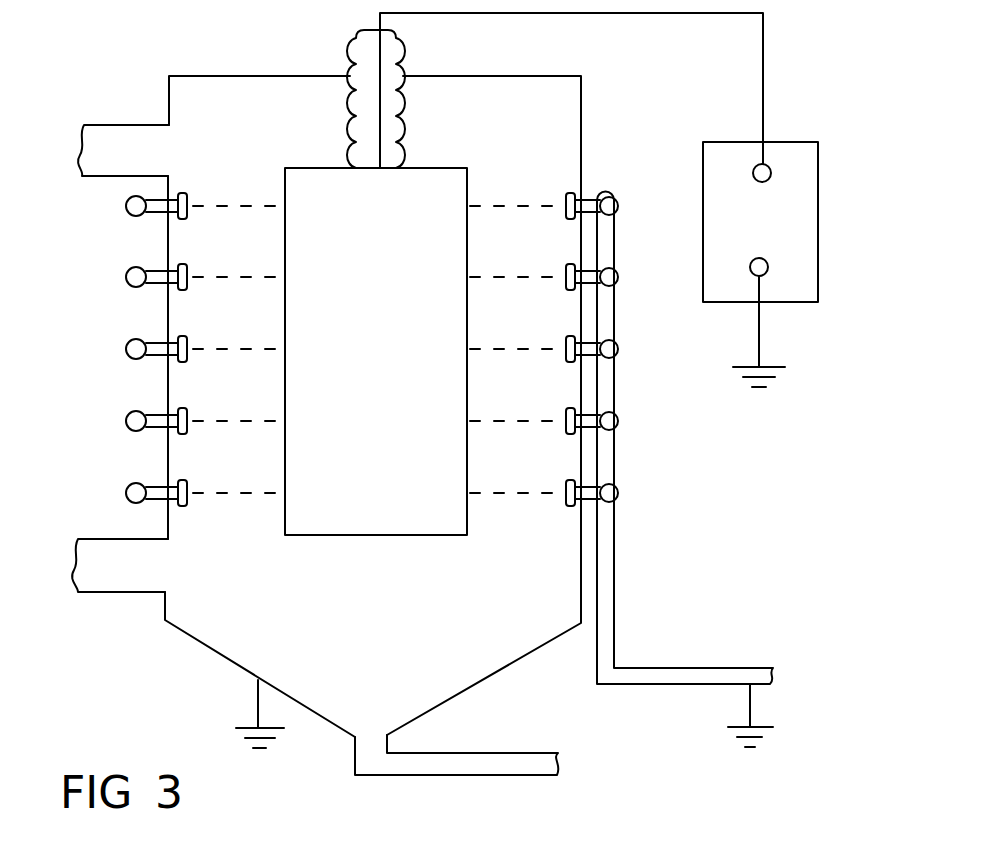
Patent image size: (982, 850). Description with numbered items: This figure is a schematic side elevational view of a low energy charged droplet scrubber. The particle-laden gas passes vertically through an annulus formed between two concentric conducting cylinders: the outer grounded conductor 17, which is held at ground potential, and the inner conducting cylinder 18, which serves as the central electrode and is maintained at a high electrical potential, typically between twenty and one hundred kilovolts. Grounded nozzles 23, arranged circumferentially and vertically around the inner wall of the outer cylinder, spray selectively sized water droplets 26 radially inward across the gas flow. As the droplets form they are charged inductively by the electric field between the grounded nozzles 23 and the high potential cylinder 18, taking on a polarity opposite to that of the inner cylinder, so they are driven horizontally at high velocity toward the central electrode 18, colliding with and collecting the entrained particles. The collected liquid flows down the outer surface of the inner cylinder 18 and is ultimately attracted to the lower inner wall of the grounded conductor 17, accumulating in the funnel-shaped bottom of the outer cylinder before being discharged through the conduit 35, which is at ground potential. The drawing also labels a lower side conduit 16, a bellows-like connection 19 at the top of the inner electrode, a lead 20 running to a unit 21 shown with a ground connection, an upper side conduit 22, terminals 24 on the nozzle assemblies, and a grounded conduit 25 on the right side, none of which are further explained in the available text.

The lower outlet conduit 16 is at (115, 600).
The outer grounded conductor 17 is at (168, 308).
The inner conducting cylinder 18 is at (287, 300).
The bellows insulator 19 is at (398, 160).
The lead wire 20 is at (378, 32).
The power supply 21 is at (793, 233).
The inlet conduit 22 is at (92, 115).
The grounded nozzles 23 is at (188, 185).
The electrode terminal 24 is at (150, 210).
The discharge conduit 25 is at (730, 660).
The water droplets 26 is at (377, 349).
The discharge conduit 35 is at (523, 747).